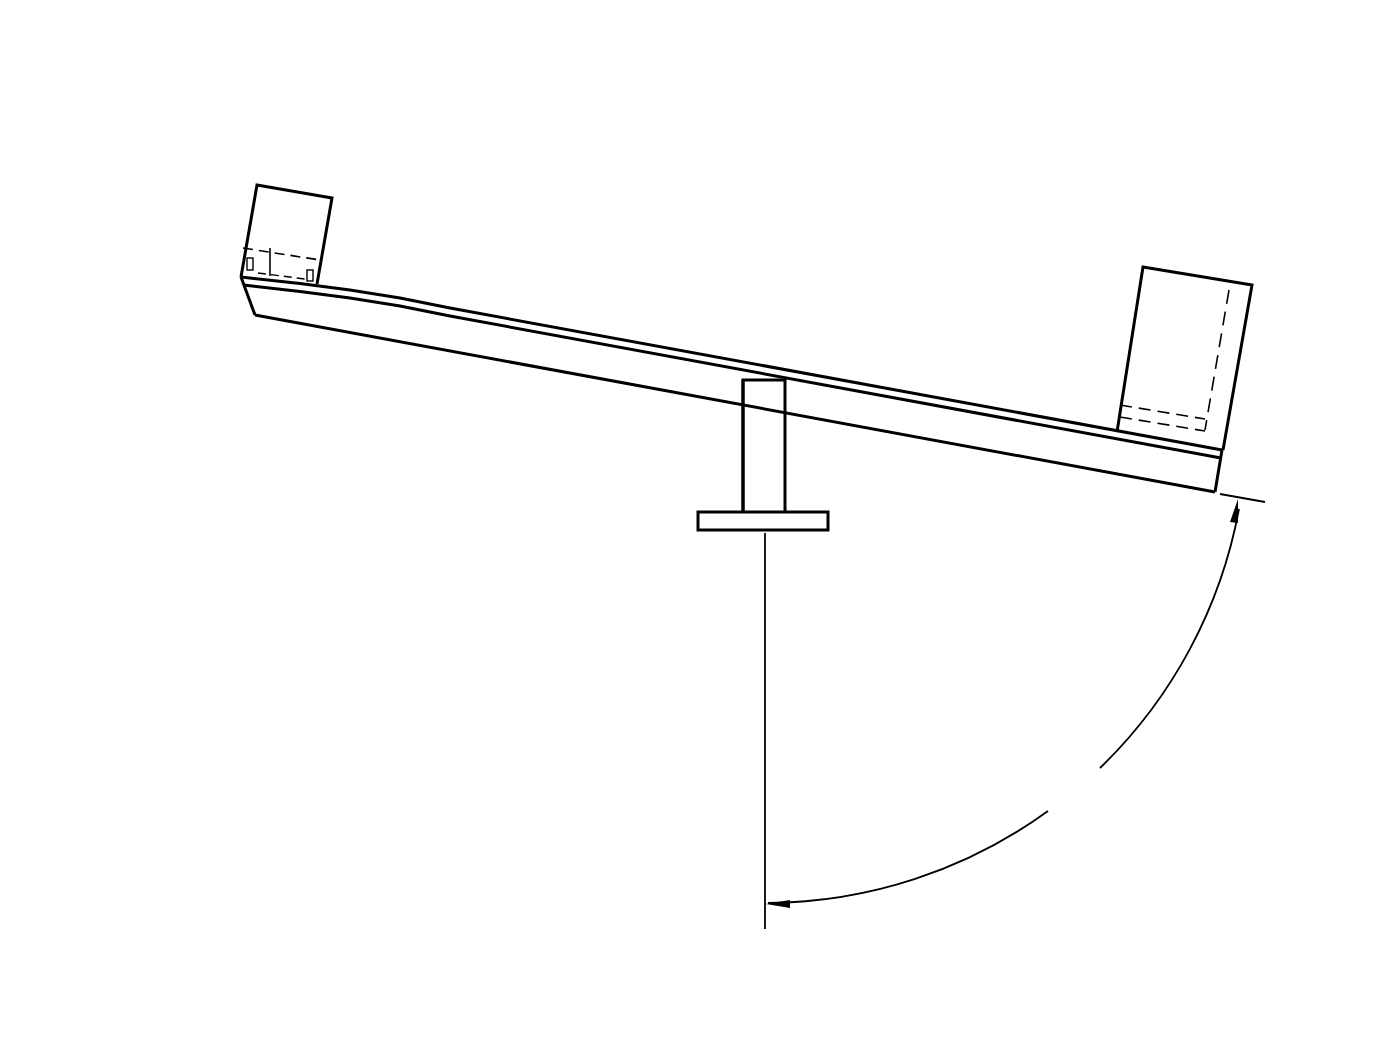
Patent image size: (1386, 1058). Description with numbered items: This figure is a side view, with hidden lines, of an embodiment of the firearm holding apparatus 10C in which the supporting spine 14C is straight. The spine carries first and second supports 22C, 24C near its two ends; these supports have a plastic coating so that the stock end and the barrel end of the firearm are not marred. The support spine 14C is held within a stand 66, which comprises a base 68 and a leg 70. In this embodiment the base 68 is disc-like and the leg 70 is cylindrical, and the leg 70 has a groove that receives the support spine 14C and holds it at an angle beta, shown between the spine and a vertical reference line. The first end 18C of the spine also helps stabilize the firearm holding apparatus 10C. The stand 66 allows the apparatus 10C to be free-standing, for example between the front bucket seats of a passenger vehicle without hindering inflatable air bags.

The firearm holding apparatus 10C is at (813, 195).
The supporting spine 14C is at (432, 335).
The first end 18C is at (1212, 480).
The first support 22C is at (1198, 297).
The second support 24C is at (310, 215).
The stand 66 is at (758, 443).
The base 68 is at (828, 524).
The leg 70 is at (780, 458).